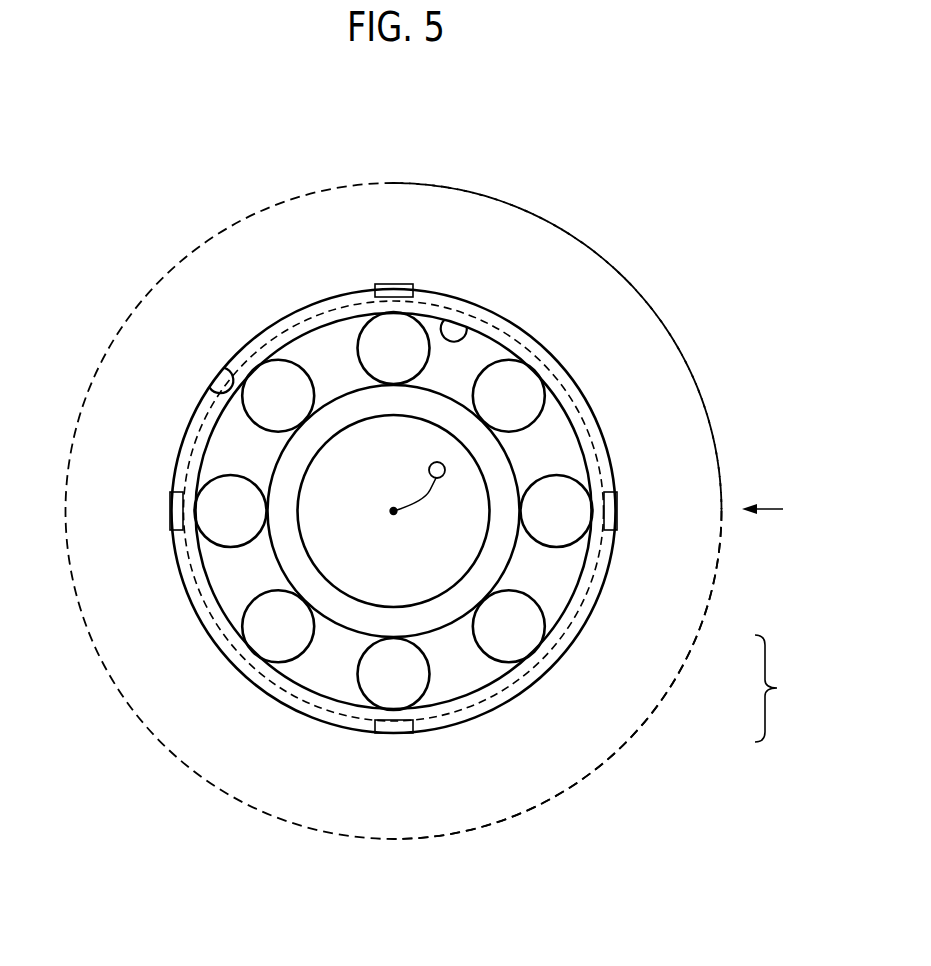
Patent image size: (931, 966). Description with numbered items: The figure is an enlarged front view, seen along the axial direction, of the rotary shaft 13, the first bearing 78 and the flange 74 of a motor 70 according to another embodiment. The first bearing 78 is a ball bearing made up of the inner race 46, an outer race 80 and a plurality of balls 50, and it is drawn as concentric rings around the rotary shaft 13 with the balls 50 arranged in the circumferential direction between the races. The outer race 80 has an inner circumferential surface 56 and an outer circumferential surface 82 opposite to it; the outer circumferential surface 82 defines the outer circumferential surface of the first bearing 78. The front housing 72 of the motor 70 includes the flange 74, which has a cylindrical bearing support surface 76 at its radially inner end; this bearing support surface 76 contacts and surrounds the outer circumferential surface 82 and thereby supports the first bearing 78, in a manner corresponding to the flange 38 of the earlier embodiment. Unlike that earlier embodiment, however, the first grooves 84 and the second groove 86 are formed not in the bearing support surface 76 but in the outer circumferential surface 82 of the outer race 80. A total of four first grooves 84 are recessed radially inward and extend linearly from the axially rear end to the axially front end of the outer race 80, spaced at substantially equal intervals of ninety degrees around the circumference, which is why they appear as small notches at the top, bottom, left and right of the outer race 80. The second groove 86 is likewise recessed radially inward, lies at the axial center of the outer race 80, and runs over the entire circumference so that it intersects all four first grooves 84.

The rotary shaft 13 is at (362, 570).
The flange 38 is at (558, 253).
The inner race 46 is at (497, 552).
The balls 50 is at (570, 638).
The inner circumferential surface 56 is at (473, 332).
The motor 70 is at (783, 121).
The front housing 72 is at (645, 360).
The flange 74 is at (670, 432).
The bearing support surface 76 is at (213, 397).
The first bearing 78 is at (783, 688).
The outer race 80 is at (512, 643).
The outer circumferential surface 82 is at (614, 552).
The first grooves 84 is at (402, 288).
The second groove 86 is at (218, 650).